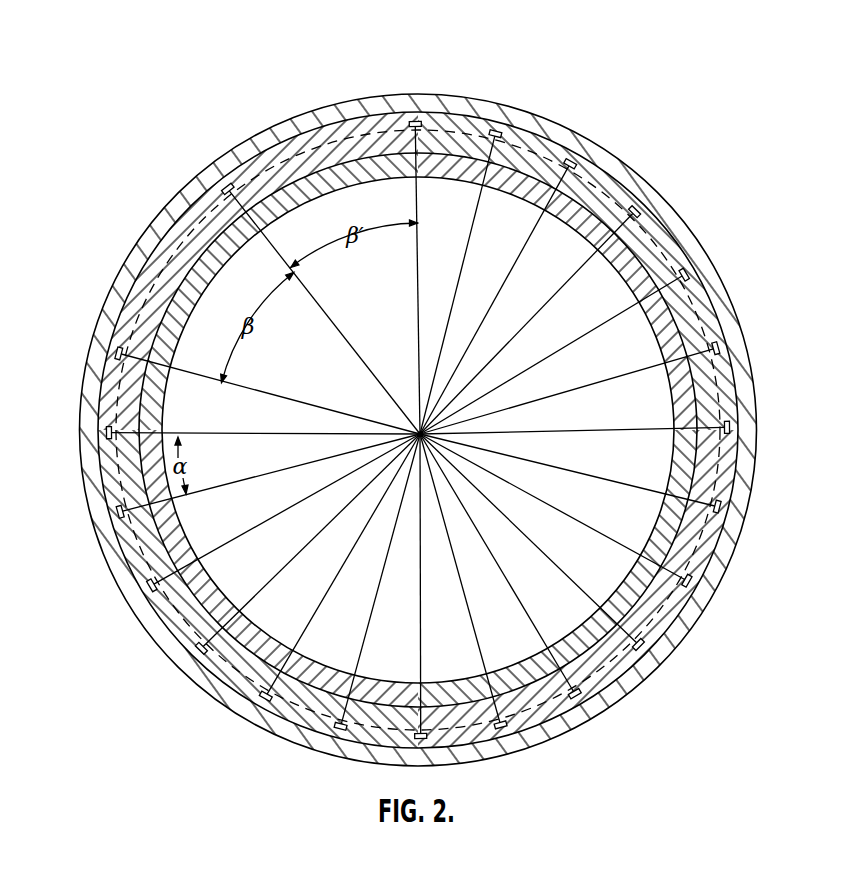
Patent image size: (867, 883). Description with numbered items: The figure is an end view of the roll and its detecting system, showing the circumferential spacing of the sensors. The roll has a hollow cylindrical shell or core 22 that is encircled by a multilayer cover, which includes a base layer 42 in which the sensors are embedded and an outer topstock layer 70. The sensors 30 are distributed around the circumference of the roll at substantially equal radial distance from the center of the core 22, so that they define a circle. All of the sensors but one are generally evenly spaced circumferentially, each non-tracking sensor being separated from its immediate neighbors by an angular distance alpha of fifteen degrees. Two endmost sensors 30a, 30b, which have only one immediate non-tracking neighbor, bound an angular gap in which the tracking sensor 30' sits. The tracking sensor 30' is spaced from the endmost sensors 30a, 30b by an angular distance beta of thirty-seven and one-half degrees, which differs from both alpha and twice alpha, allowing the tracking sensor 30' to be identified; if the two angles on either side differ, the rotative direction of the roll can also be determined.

The hollow cylindrical shell or core 22 is at (748, 360).
The topstock layer 70 is at (617, 166).
The base layer 42 is at (610, 677).
The sensors 30 is at (417, 392).
The endmost sensor 30a is at (418, 121).
The tracking sensor 30' is at (203, 153).
The endmost sensor 30b is at (113, 350).